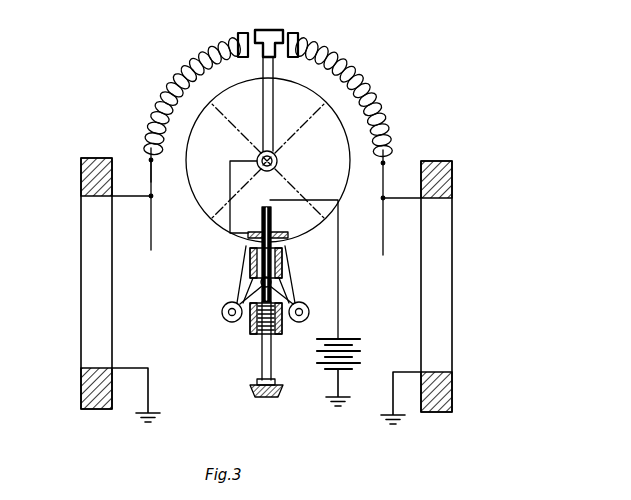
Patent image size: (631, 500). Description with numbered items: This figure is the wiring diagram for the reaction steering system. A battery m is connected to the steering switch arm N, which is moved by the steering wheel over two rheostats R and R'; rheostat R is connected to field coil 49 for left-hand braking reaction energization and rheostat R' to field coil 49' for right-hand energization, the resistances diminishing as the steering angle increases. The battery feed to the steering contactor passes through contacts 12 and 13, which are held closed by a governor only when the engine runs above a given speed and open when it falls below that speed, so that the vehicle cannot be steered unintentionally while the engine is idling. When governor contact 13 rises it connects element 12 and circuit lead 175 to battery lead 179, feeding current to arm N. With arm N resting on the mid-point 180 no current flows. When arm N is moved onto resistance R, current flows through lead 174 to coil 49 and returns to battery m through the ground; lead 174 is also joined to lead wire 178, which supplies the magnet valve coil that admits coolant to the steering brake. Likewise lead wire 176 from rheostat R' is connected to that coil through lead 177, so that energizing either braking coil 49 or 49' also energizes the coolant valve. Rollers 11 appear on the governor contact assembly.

The field coil 49 is at (72, 283).
The field coil 49' is at (458, 286).
The lead 174 is at (150, 181).
The circuit lead 175 is at (227, 173).
The lead wire 176 is at (387, 167).
The lead 177 is at (388, 228).
The magnet valve coil lead wire 178 is at (152, 224).
The battery lead 179 is at (318, 199).
The mid-point 180 is at (283, 32).
The rheostat R is at (192, 95).
The rheostat R' is at (343, 96).
The steering switch arm N is at (273, 124).
The battery m is at (341, 336).
The rollers 11 is at (222, 309).
The contact 12 is at (284, 233).
The governor contact 13 is at (284, 252).